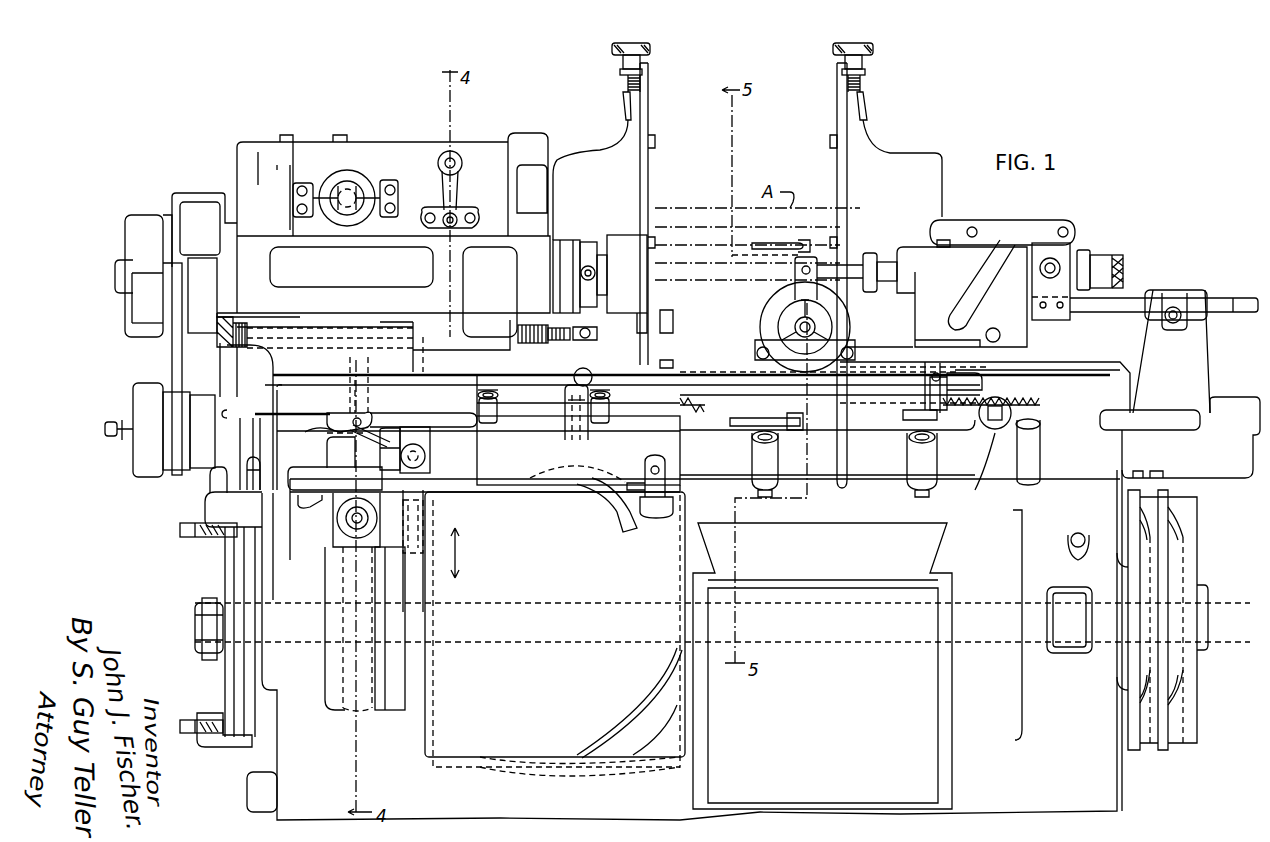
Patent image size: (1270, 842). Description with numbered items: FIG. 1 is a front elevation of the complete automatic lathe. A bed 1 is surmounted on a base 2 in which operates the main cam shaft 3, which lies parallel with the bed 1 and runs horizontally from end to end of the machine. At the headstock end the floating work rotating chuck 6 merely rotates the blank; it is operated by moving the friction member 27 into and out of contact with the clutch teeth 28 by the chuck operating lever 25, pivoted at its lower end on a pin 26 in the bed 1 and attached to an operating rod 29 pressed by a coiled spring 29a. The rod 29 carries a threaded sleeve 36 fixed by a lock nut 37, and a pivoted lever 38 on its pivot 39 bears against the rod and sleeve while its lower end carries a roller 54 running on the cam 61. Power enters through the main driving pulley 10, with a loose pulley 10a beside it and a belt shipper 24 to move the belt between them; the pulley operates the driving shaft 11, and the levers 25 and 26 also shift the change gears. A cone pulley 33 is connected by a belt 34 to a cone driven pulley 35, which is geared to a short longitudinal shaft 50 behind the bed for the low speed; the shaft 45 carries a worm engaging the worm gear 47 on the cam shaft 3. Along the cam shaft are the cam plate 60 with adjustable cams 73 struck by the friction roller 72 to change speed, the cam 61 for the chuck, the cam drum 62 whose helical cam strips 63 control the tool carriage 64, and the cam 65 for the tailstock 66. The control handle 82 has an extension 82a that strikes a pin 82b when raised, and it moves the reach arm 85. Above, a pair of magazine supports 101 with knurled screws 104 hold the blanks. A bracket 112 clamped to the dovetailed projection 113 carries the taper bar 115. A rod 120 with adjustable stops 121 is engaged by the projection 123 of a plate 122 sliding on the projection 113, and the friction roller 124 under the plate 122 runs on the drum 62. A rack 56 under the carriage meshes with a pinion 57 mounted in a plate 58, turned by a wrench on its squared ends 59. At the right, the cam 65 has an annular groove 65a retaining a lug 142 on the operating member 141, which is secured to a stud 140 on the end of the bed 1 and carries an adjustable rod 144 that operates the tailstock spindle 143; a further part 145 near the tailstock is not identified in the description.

The bed 1 is at (228, 472).
The base 2 is at (290, 762).
The main cam shaft 3 is at (850, 642).
The work rotating chuck 6 is at (628, 243).
The main driving pulley 10 is at (130, 243).
The loose pulley 10a is at (202, 233).
The driving shaft 11 is at (115, 268).
The belt shipper 24 is at (178, 197).
The chuck operating lever 25 is at (350, 217).
The pin 26 is at (455, 216).
The friction member 27 is at (576, 240).
The clutch teeth 28 is at (603, 247).
The operating rod 29 is at (457, 331).
The coiled spring 29a is at (552, 342).
The cone pulley 33 is at (140, 308).
The belt 34 is at (163, 385).
The cone driven pulley 35 is at (140, 462).
The sleeve 36 is at (372, 327).
The lock nut 37 is at (228, 347).
The pivoted lever 38 is at (432, 427).
The pivot 39 is at (425, 457).
The shaft 45 is at (347, 520).
The worm gear 47 is at (492, 153).
The short longitudinal shaft 50 is at (137, 293).
The roller 54 is at (428, 540).
The rack 56 is at (1027, 393).
The pinion 57 is at (988, 433).
The plate 58 is at (1005, 478).
The squared ends 59 is at (973, 469).
The cam plate 60 is at (228, 673).
The cam 61 is at (390, 712).
The cam drum 62 is at (495, 760).
The helical cam strips 63 is at (660, 688).
The tool carriage 64 is at (688, 355).
The cam 65 is at (1190, 513).
The annular groove 65a is at (1147, 577).
The tailstock 66 is at (1010, 277).
The friction roller 72 is at (210, 497).
The adjustable cams 73 is at (237, 527).
The handle 82 is at (380, 420).
The extension 82a is at (335, 413).
The pin 82b is at (222, 480).
The reach arm 85 is at (310, 506).
The magazine supports 101 is at (592, 163).
The knurled screw 104 is at (652, 48).
The bracket 112 is at (862, 475).
The dovetailed projection 113 is at (712, 470).
The taper bar 115 is at (882, 362).
The rod 120 is at (660, 405).
The adjustable stops 121 is at (486, 425).
The plate 122 is at (490, 477).
The projection 123 is at (567, 402).
The friction roller 124 is at (660, 518).
The stud 140 is at (1215, 400).
The operating member 141 is at (1195, 370).
The lug 142 is at (1150, 492).
The tailstock spindle 143 is at (1105, 268).
The rod 144 is at (1127, 303).
The screw 145 is at (1183, 318).